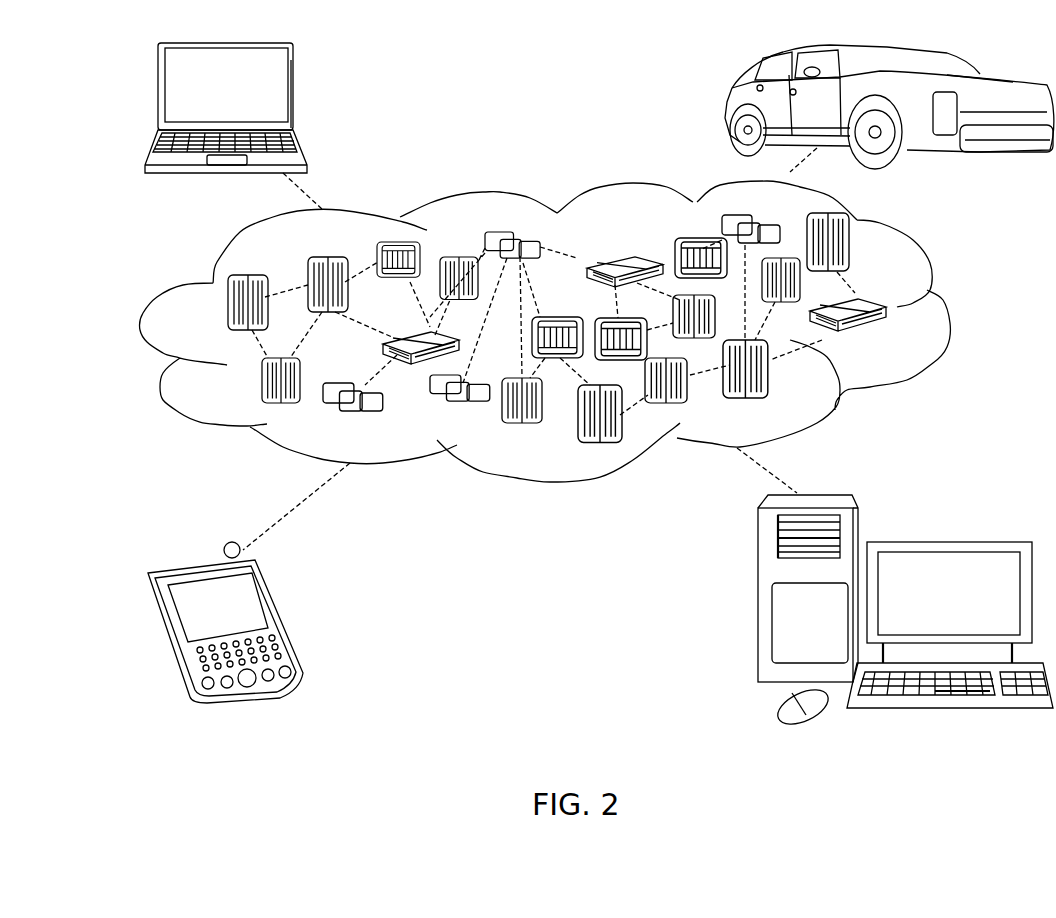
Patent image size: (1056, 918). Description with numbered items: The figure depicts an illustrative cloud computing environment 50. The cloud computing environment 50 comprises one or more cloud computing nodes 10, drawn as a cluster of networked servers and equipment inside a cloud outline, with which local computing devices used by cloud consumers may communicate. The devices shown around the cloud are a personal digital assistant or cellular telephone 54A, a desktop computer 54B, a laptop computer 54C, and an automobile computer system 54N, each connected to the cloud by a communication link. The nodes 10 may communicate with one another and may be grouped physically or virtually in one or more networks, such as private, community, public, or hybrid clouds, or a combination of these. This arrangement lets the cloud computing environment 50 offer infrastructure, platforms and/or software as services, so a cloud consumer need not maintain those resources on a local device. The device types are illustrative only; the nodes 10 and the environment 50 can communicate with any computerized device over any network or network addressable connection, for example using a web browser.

The cloud computing node 10 is at (903, 338).
The cloud computing environment 50 is at (572, 365).
The personal digital assistant or cellular telephone 54A is at (283, 617).
The desktop computer 54B is at (958, 523).
The laptop computer 54C is at (293, 92).
The automobile computer system 54N is at (725, 103).